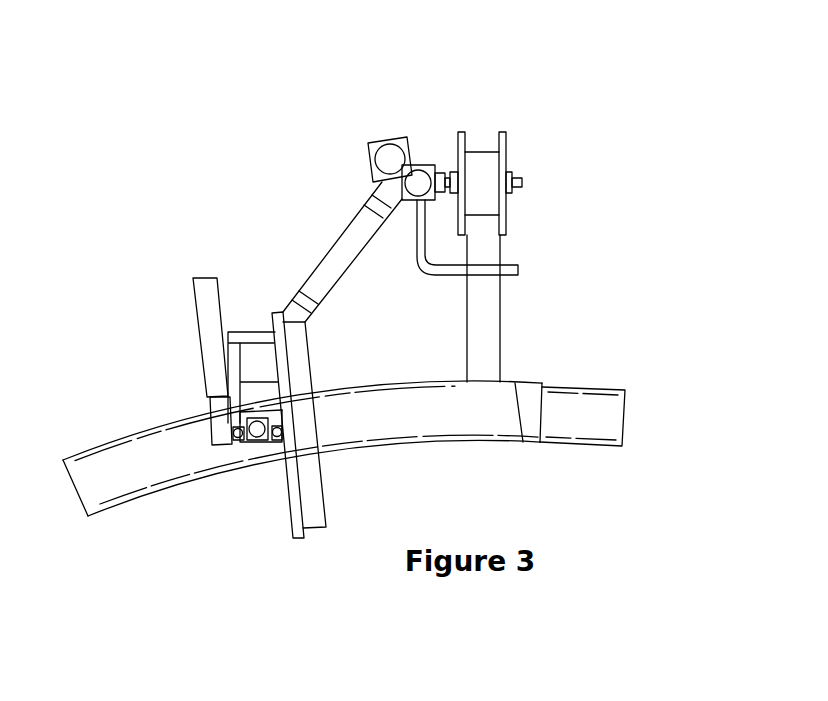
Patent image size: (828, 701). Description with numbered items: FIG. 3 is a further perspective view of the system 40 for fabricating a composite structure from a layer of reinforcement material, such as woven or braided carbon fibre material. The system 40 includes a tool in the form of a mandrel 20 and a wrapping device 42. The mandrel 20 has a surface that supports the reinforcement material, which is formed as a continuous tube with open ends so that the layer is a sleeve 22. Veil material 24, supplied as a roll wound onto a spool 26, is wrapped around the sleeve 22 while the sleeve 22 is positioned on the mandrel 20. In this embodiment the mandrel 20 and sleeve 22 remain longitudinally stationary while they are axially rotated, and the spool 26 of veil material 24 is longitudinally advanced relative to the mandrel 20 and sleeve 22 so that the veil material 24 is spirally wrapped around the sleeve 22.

The mandrel 20 is at (627, 432).
The sleeve 22 is at (580, 415).
The veil material 24 is at (488, 312).
The spool 26 is at (484, 170).
The system 40 is at (394, 99).
The wrapping device 42 is at (312, 260).